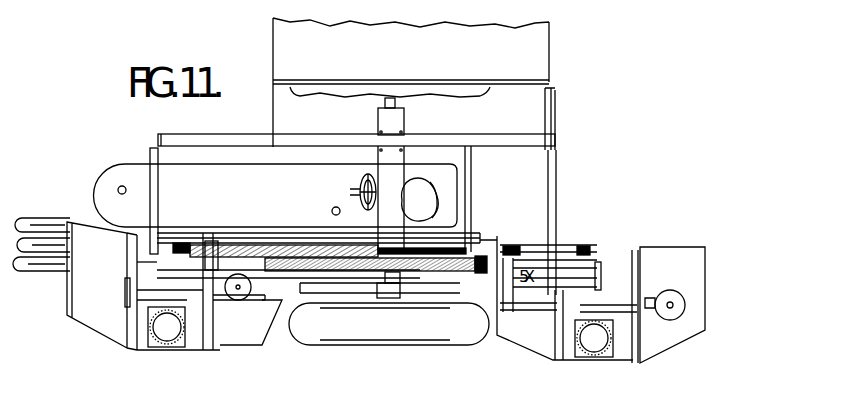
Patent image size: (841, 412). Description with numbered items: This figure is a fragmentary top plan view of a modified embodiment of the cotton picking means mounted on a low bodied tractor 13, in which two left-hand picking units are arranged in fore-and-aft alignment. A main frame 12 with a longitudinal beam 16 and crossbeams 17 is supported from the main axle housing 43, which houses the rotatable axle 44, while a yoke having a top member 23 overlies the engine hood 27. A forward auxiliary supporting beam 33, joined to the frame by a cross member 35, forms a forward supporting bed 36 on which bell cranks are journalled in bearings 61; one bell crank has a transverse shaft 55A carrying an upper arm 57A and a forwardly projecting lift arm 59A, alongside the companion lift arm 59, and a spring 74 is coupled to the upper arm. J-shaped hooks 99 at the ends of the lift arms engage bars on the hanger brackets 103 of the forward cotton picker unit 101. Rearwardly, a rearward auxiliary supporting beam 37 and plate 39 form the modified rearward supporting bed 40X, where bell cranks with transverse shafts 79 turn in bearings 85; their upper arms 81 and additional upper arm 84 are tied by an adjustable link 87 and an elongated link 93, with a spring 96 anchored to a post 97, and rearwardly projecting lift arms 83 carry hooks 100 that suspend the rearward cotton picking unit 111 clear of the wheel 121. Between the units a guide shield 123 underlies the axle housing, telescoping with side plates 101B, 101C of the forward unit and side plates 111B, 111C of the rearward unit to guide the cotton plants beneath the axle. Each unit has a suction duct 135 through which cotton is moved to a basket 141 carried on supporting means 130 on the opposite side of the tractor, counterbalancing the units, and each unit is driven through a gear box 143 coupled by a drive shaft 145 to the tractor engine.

The basket 141 is at (538, 52).
The main frame 12 is at (472, 140).
The supporting means 130 is at (549, 120).
The longitudinal beam 16 is at (304, 143).
The axle 44 is at (396, 103).
The main axle housing 43 is at (396, 122).
The engine hood 27 is at (276, 207).
The tractor 13 is at (122, 153).
The top member 23 is at (159, 194).
The side plate 101B is at (319, 209).
The guide shield 123 is at (352, 242).
The elongated link 93 is at (426, 204).
The crossbeam 17 is at (472, 188).
The side plate 111B is at (478, 246).
The forward auxiliary supporting beam 33 is at (307, 278).
The spring 74 is at (262, 245).
The spring 96 is at (445, 273).
The upper arm 57A is at (181, 242).
The post 97 is at (213, 240).
The side plate 101C is at (327, 293).
The cross member 35 is at (401, 276).
The side plate 111C is at (442, 279).
The wheel 121 is at (395, 336).
The forward cotton picker unit 101 is at (75, 284).
The bearings 61 is at (147, 266).
The forward supporting bed 36 is at (168, 276).
The J-shaped hook 99 is at (126, 291).
The hanger bracket 103 is at (127, 304).
The lift arm 59A is at (150, 298).
The suction duct 135 is at (167, 340).
The transverse shaft 55A is at (205, 305).
The lift arm 59 is at (218, 301).
The gear box 143 is at (246, 301).
The adjustable link 87 is at (547, 251).
The upper arm 84 is at (509, 246).
The upper arm 81 is at (584, 247).
The rearward supporting bed 40X is at (598, 256).
The bearings 85 is at (599, 262).
The rearward auxiliary supporting beam 37 is at (531, 287).
The plate 39 is at (601, 274).
The transverse shaft 79 is at (508, 312).
The lift arm 83 is at (528, 310).
The J-shaped hook 100 is at (636, 314).
The rearward cotton picking unit 111 is at (672, 305).
The drive shaft 145 is at (651, 298).